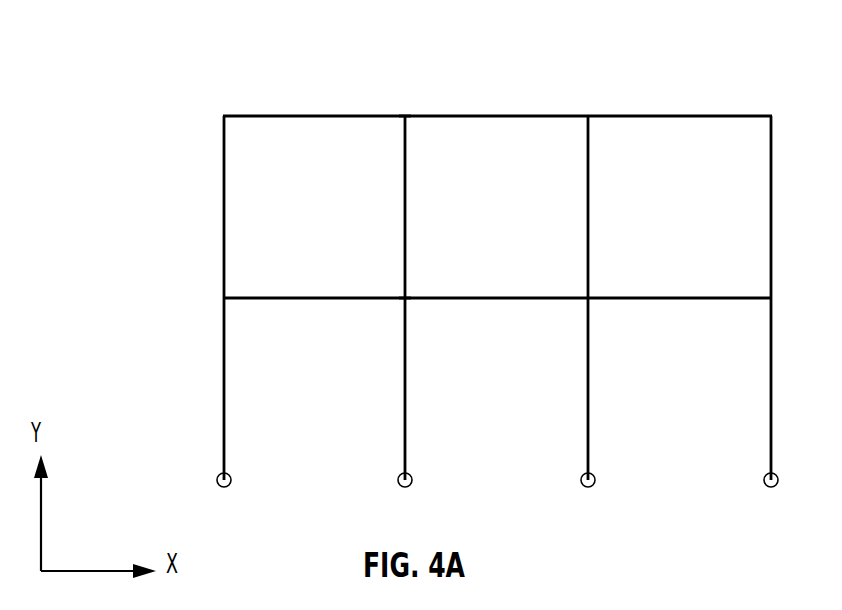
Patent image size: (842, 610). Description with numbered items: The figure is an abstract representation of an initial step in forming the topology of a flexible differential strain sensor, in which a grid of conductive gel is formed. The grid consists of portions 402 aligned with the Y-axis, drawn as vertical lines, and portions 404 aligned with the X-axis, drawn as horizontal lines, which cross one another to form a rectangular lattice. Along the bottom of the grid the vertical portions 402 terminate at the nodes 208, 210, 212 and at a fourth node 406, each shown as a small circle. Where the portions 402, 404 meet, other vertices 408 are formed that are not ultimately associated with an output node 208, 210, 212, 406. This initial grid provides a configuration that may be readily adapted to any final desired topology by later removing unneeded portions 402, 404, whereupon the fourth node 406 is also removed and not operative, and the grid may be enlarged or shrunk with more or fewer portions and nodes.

The portions aligned with the Y-axis 402 is at (223, 223).
The portions aligned with the X-axis 404 is at (659, 116).
The vertices 408 is at (404, 115).
The node 208 is at (217, 479).
The node 210 is at (398, 478).
The node 212 is at (581, 478).
The fourth node 406 is at (764, 478).